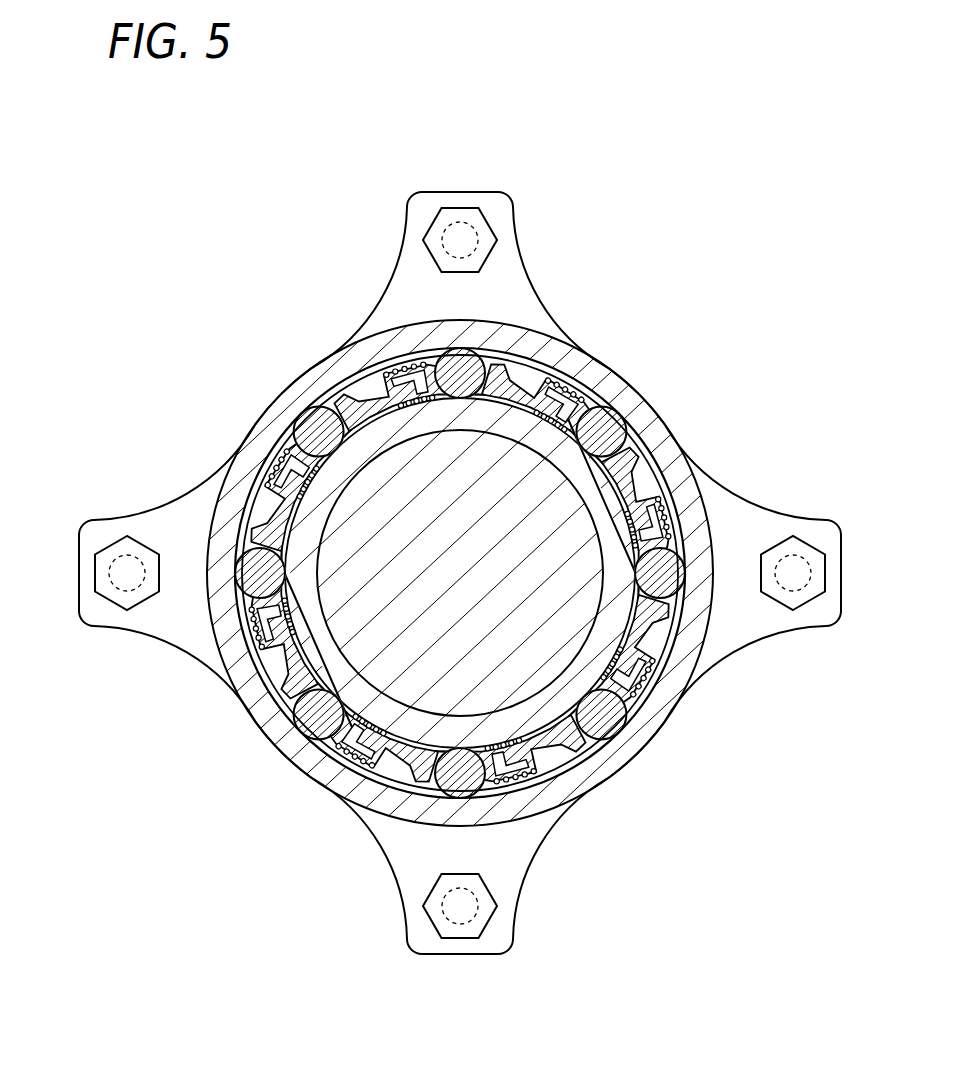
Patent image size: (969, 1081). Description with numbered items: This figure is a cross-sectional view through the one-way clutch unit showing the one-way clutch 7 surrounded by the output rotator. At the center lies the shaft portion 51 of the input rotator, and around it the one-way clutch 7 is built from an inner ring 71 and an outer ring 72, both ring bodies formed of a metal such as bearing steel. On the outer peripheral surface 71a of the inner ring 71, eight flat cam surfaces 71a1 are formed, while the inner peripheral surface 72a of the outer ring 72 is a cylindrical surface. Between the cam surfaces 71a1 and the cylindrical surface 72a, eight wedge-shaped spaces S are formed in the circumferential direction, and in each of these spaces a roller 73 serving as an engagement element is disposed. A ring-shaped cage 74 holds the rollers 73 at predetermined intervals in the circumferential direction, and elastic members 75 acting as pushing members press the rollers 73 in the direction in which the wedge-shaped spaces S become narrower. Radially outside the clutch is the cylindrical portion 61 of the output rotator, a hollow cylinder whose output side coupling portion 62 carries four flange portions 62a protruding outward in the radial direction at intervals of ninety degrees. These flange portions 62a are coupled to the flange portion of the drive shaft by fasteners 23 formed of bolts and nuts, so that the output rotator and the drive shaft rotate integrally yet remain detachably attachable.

The one-way clutch 7 is at (484, 540).
The fasteners 23 is at (463, 206).
The shaft portion 51 is at (297, 766).
The cylindrical portion 61 is at (673, 243).
The output side coupling portion 62 is at (445, 574).
The flange portions 62a is at (405, 199).
The inner ring 71 is at (484, 465).
The outer peripheral surface 71a is at (494, 379).
The cam surfaces 71a1 is at (563, 438).
The outer ring 72 is at (484, 541).
The inner peripheral surface 72a is at (604, 386).
The rollers 73 is at (452, 358).
The cage 74 is at (258, 673).
The elastic members 75 is at (290, 452).
The wedge-shaped spaces S is at (396, 357).